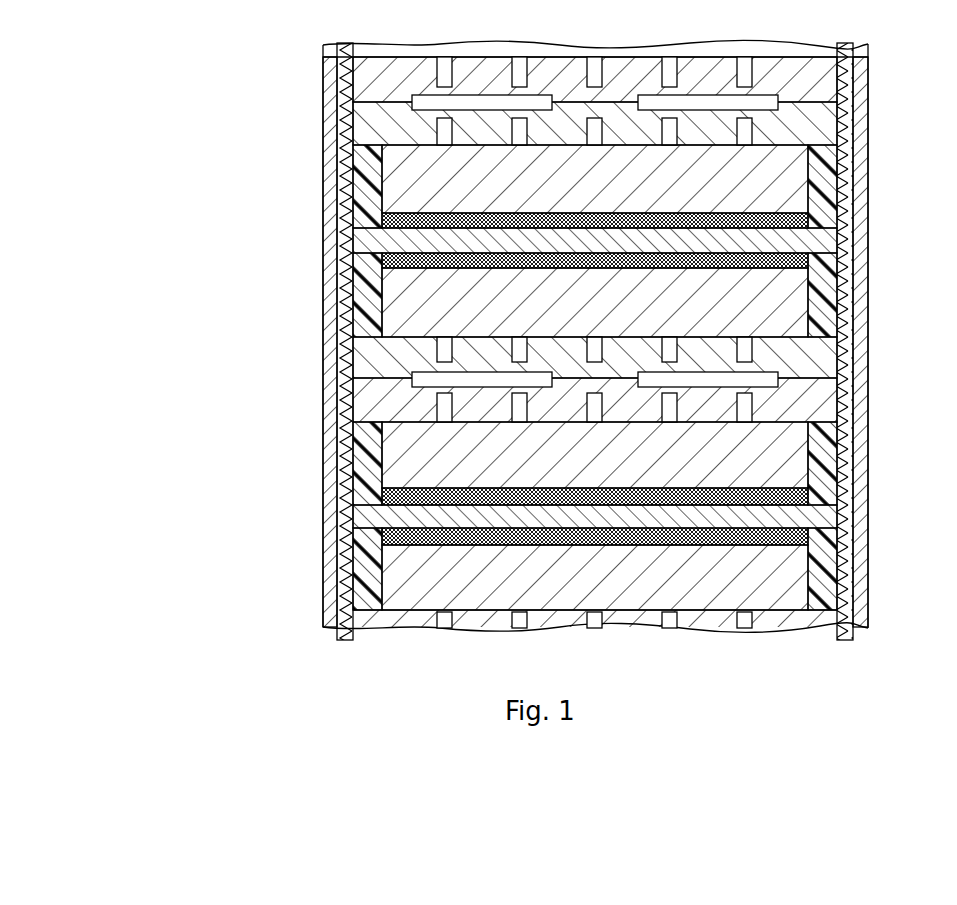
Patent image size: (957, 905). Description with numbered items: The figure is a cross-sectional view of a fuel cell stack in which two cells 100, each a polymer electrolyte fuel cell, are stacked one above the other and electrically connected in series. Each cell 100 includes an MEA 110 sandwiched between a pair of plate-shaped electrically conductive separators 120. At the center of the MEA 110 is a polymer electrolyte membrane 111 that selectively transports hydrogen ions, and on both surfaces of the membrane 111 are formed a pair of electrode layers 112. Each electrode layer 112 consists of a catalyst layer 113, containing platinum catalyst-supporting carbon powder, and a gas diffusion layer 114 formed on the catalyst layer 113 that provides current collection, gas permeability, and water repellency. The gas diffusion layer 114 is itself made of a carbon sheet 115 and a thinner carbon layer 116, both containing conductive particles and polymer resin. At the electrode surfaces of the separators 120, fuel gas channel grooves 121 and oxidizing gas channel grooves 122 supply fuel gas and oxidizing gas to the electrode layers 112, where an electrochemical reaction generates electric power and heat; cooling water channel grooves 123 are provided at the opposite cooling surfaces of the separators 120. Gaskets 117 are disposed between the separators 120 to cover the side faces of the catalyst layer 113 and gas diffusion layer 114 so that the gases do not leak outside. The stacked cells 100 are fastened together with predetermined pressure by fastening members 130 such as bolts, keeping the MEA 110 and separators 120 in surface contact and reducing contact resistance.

The cell 100 is at (147, 105).
The MEA 110 is at (187, 185).
The polymer electrolyte membrane 111 is at (335, 245).
The electrode layer 112 is at (230, 178).
The catalyst layer 113 is at (382, 218).
The gas diffusion layer 114 is at (520, 377).
The carbon sheet 115 is at (340, 178).
The carbon layer 116 is at (340, 200).
The gasket 117 is at (823, 178).
The separator 120 is at (546, 318).
The fuel gas channel groove 121 is at (443, 136).
The oxidizing gas channel groove 122 is at (447, 65).
The cooling water channel groove 123 is at (477, 102).
The fastening member 130 is at (348, 57).